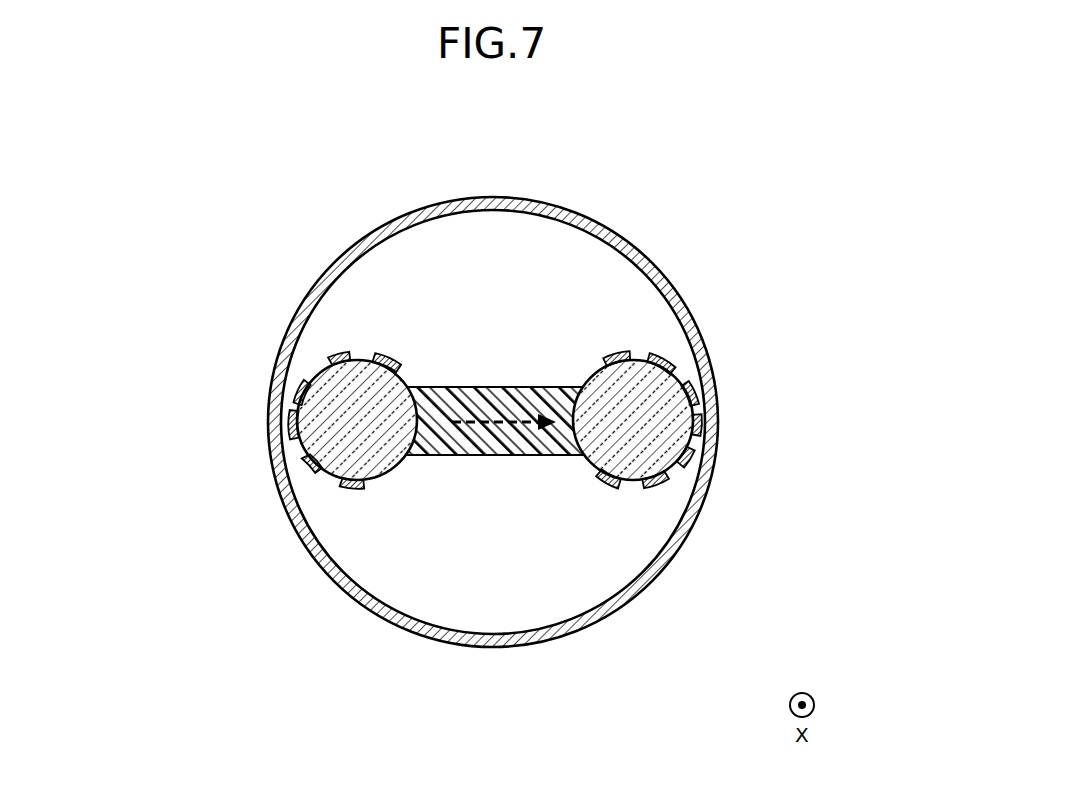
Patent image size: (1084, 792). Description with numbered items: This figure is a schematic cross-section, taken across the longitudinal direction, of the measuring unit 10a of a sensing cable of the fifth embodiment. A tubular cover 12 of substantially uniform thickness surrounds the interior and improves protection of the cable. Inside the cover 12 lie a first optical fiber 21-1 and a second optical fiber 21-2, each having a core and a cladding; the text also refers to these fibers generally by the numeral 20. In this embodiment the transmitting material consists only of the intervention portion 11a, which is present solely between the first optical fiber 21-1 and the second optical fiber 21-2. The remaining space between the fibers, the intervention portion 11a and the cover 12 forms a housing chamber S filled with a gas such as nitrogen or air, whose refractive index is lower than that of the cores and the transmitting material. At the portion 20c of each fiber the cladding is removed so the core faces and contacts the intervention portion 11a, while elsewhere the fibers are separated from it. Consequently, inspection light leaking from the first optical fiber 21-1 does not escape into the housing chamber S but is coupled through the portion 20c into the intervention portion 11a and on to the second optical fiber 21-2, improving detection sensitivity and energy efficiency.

The measuring unit 10a is at (696, 190).
The cover 12 is at (663, 273).
The housing chamber S is at (587, 253).
The intervention portion 11a is at (484, 387).
The electric wire 20 is at (495, 541).
The first optical fiber 21-1 is at (163, 510).
The second optical fiber 21-2 is at (822, 480).
The portion 20c is at (542, 486).